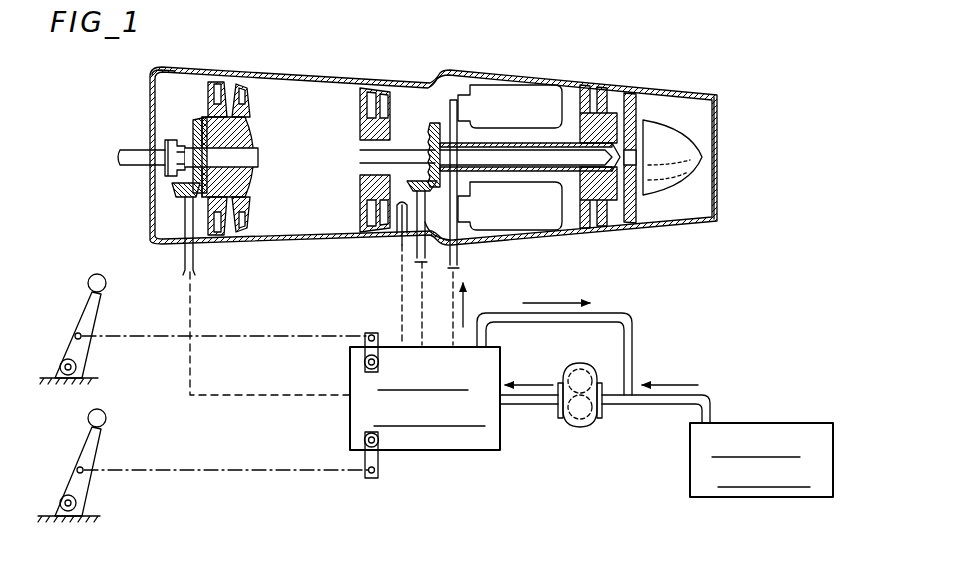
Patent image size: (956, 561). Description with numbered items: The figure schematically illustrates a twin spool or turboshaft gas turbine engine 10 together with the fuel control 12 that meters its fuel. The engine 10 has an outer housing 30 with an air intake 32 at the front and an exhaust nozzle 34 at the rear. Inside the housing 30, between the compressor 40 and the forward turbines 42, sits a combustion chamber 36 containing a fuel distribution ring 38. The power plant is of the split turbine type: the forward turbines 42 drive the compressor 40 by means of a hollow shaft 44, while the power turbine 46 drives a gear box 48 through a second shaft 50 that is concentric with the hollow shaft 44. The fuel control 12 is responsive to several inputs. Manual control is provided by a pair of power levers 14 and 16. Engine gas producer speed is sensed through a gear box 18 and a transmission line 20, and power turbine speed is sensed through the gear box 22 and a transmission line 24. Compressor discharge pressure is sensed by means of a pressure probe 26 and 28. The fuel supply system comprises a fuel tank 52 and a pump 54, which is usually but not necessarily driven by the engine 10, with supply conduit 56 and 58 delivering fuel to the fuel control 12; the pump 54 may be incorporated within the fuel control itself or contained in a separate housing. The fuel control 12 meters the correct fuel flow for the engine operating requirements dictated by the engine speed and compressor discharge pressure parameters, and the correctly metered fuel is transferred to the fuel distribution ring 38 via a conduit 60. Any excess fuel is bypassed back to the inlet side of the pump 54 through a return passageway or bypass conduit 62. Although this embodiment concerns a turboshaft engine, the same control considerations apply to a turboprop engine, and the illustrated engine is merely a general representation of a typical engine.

The gas turbine engine 10 is at (547, 60).
The fuel control 12 is at (434, 456).
The power lever 14 is at (88, 447).
The power lever 16 is at (88, 304).
The gear box 18 is at (433, 123).
The transmission line 20 is at (419, 284).
The gear box 22 is at (176, 188).
The transmission line 24 is at (283, 395).
The pressure probe 26 is at (360, 207).
The pressure probe 28 is at (398, 258).
The outer housing 30 is at (188, 67).
The air intake 32 is at (150, 85).
The exhaust nozzle 34 is at (690, 118).
The combustion chamber 36 is at (528, 114).
The fuel distribution ring 38 is at (510, 206).
The compressor 40 is at (248, 82).
The forward turbines 42 is at (605, 97).
The hollow shaft 44 is at (490, 143).
The power turbine 46 is at (637, 103).
The gear box 48 is at (172, 140).
The second shaft 50 is at (240, 152).
The fuel tank 52 is at (800, 425).
The pump 54 is at (583, 427).
The supply conduit 56 is at (708, 392).
The supply conduit 58 is at (530, 398).
The conduit 60 is at (457, 258).
The bypass conduit 62 is at (601, 318).